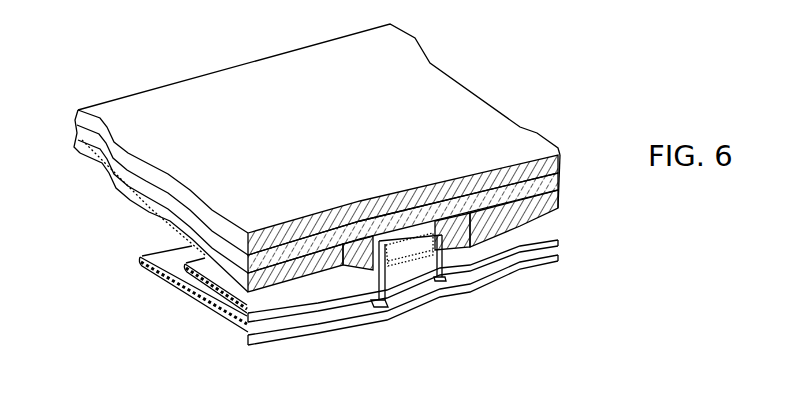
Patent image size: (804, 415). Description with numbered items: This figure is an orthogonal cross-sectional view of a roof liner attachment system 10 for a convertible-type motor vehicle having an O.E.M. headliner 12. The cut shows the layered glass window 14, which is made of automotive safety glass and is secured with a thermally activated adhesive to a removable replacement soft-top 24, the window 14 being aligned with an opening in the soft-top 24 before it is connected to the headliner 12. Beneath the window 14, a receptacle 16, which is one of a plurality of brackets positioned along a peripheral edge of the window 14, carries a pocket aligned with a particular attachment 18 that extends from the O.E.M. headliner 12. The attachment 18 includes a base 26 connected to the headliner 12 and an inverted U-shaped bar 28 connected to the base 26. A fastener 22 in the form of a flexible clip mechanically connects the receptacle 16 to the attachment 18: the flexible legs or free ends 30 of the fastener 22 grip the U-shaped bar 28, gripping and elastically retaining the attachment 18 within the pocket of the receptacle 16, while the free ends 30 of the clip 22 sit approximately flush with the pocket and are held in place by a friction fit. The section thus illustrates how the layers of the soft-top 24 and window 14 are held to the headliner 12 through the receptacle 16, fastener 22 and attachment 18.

The roof liner attachment system 10 is at (567, 71).
The O.E.M. headliner 12 is at (186, 304).
The window 14 is at (368, 201).
The receptacle 16 is at (360, 298).
The attachment 18 is at (433, 285).
The fastener 22 is at (453, 281).
The soft-top 24 is at (752, 406).
The base 26 is at (403, 305).
The inverted U-shaped bar 28 is at (330, 347).
The free ends 30 is at (403, 304).